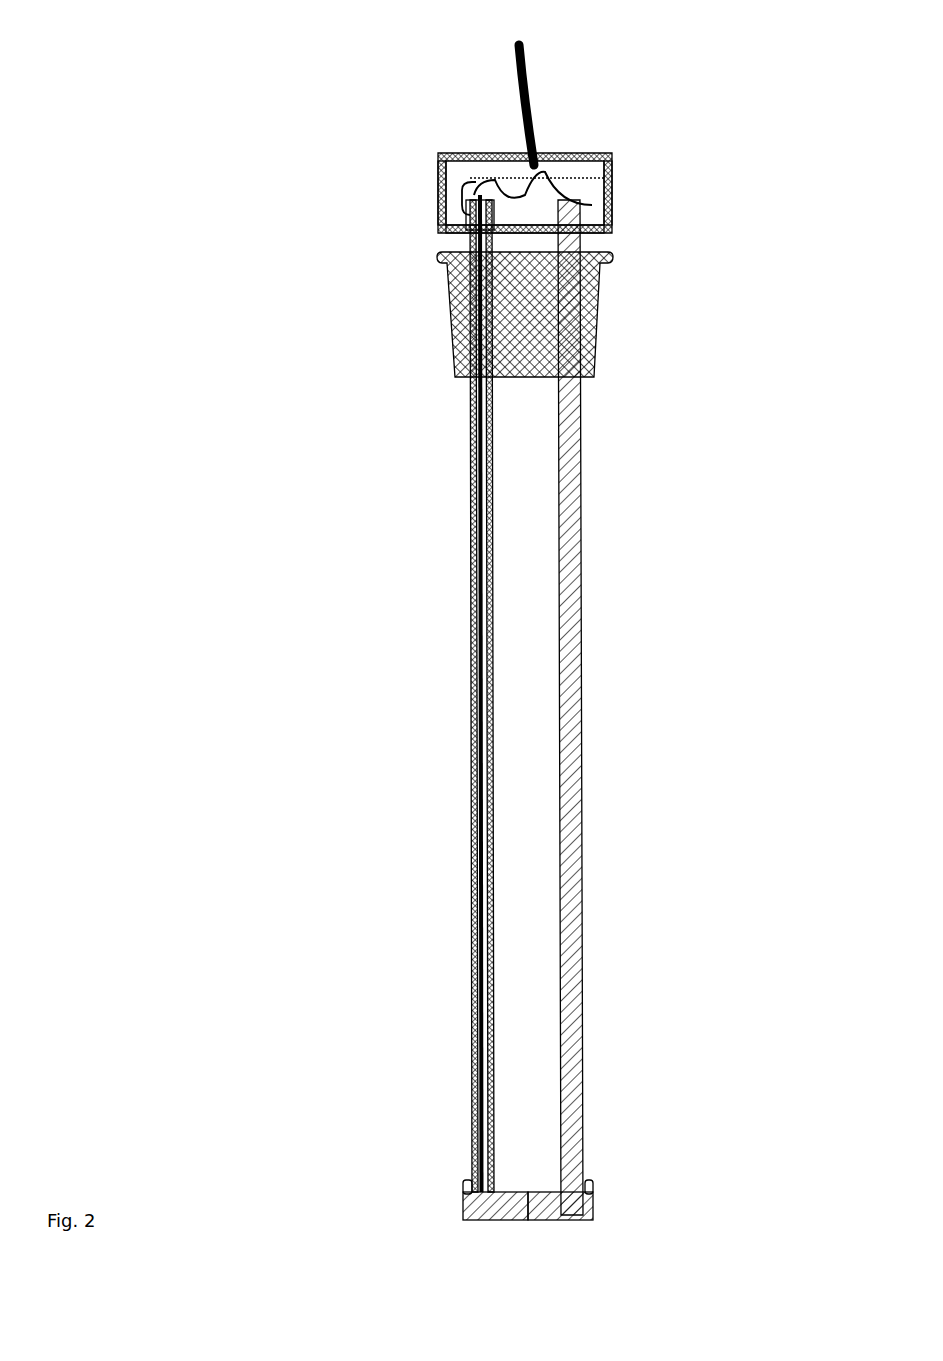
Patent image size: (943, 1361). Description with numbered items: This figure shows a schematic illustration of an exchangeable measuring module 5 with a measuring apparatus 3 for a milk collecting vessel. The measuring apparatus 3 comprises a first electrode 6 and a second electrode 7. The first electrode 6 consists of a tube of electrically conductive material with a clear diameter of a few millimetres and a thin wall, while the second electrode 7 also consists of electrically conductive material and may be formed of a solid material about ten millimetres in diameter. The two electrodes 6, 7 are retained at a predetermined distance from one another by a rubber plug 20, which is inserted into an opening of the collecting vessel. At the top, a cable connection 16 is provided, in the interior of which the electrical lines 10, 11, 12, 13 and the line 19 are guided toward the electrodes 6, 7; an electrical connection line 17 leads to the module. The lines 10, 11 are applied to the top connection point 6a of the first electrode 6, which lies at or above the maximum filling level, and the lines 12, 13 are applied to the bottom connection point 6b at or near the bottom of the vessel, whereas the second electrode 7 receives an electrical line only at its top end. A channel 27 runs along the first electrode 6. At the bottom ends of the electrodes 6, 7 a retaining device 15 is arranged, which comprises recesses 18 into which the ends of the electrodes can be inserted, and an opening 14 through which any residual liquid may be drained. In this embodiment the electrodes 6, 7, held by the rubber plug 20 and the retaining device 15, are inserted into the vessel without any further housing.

The measuring apparatus 3 is at (418, 585).
The measuring module 5 is at (715, 620).
The first electrode 6 is at (470, 495).
The connection point 6a is at (445, 208).
The connection point 6b is at (465, 1190).
The second electrode 7 is at (585, 240).
The line 10 is at (508, 178).
The line 11 is at (548, 175).
The line 12 is at (520, 180).
The line 13 is at (476, 200).
The opening 14 is at (528, 1220).
The retaining device 15 is at (465, 1205).
The cable connection 16 is at (438, 170).
The electrical connection line 17 is at (503, 77).
The recesses 18 is at (590, 1215).
The line 19 is at (605, 178).
The rubber plug 20 is at (600, 348).
The channel 27 is at (470, 850).